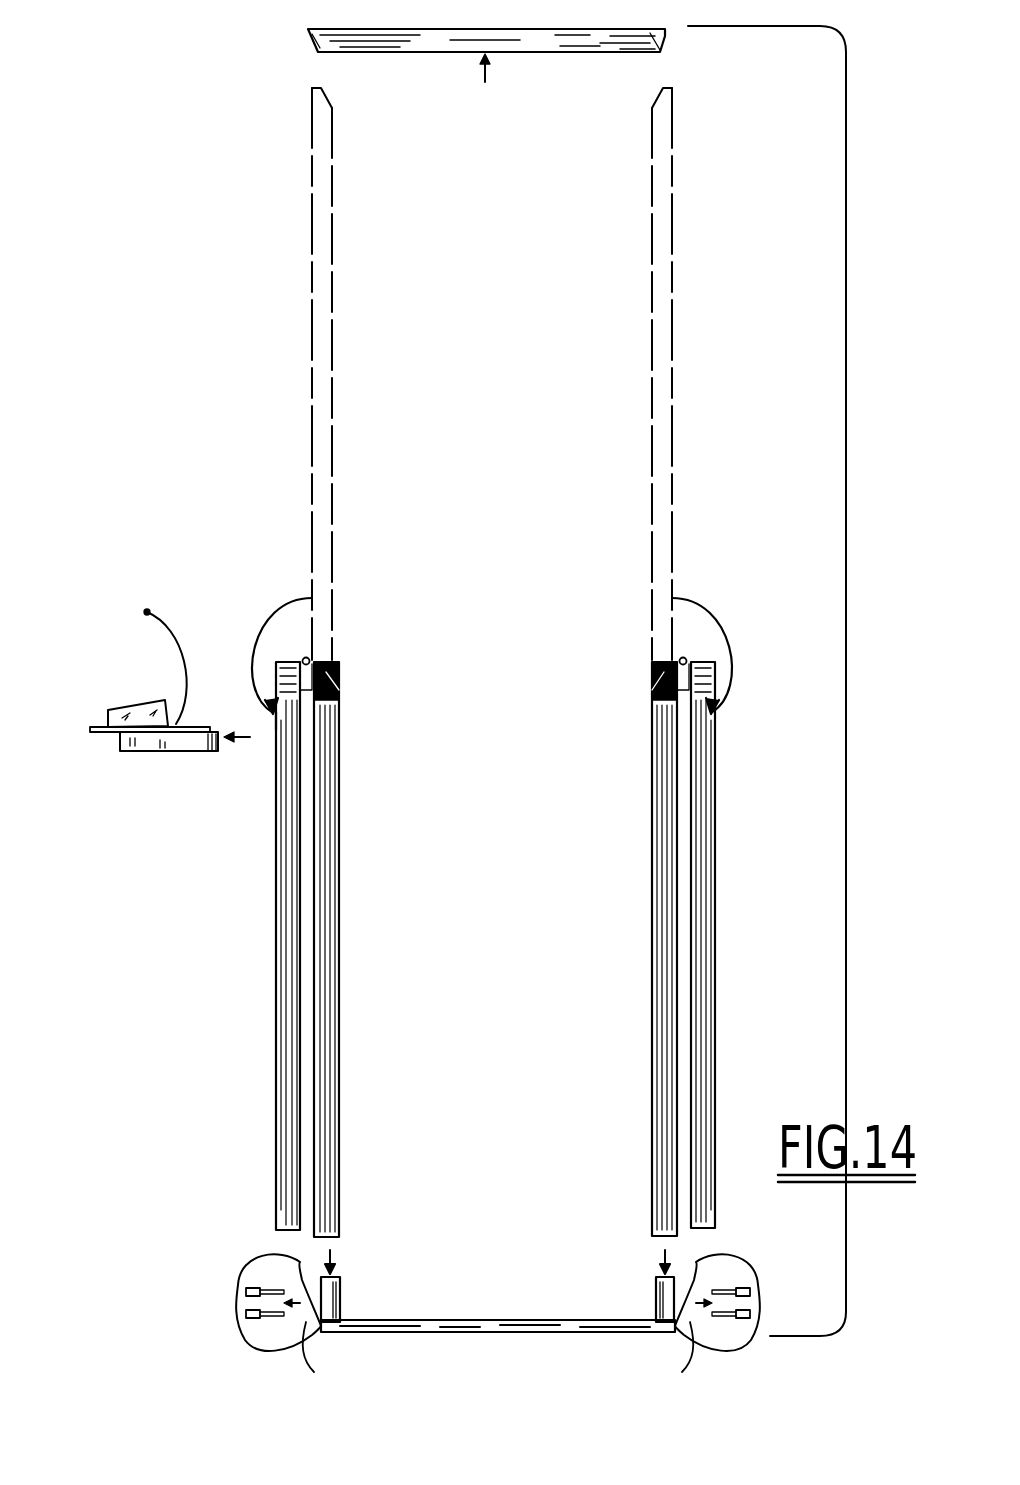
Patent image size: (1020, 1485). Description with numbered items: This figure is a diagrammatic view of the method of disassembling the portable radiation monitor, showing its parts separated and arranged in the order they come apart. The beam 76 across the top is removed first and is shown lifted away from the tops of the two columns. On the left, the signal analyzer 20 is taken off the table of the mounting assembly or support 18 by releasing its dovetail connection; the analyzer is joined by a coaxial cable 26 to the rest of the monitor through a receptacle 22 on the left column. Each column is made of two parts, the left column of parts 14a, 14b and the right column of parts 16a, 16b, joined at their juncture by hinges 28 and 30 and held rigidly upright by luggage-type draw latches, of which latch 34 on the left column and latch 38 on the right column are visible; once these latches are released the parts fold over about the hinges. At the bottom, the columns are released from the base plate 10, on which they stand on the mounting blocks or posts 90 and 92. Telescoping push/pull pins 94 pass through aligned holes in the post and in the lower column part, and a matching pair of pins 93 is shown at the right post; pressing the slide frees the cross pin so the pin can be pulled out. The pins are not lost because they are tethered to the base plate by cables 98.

The base plate 10 is at (566, 1332).
The column part 14a is at (290, 880).
The lower column part 14b is at (328, 880).
The column part 16a is at (704, 880).
The column part 16b is at (664, 880).
The support 18 is at (158, 772).
The signal analyzer 20 is at (158, 704).
The receptacle 22 is at (275, 722).
The coaxial cable 26 is at (184, 642).
The hinge 28 is at (310, 657).
The hinge 30 is at (679, 657).
The draw latch 34 is at (328, 688).
The draw latch 38 is at (664, 688).
The beam 76 is at (530, 53).
The mounting block 90 is at (342, 1286).
The mounting block 92 is at (654, 1286).
The right connector plug 93 is at (750, 1314).
The push/pull pins 94 is at (246, 1314).
The cables 98 is at (498, 1359).